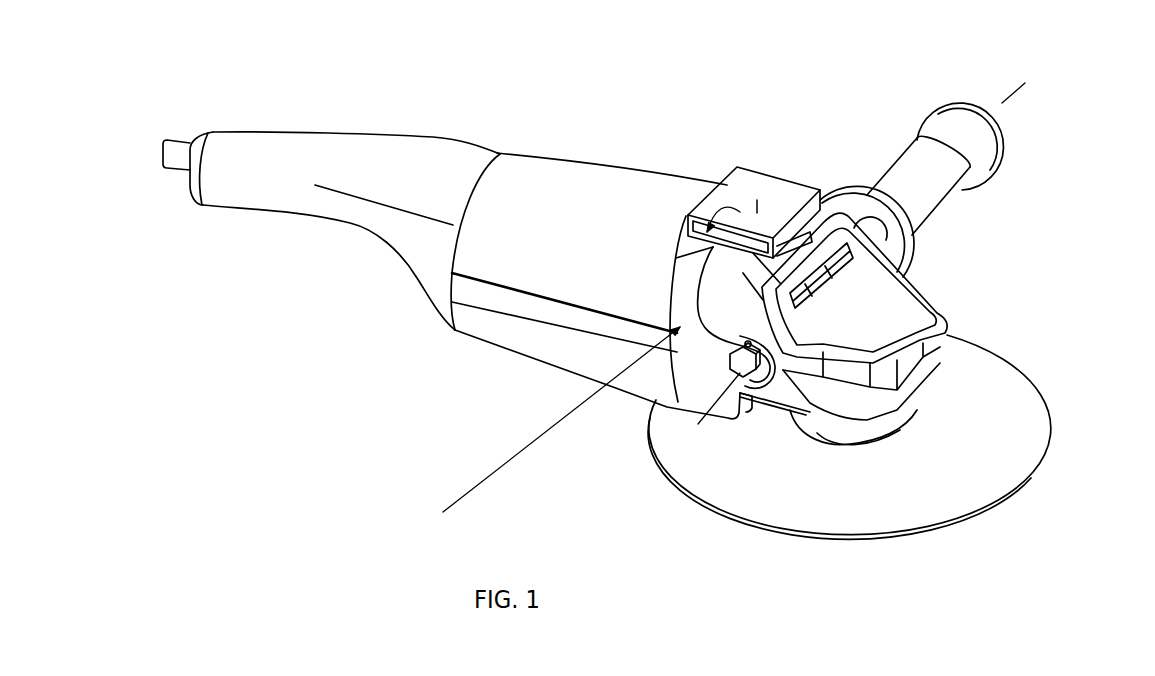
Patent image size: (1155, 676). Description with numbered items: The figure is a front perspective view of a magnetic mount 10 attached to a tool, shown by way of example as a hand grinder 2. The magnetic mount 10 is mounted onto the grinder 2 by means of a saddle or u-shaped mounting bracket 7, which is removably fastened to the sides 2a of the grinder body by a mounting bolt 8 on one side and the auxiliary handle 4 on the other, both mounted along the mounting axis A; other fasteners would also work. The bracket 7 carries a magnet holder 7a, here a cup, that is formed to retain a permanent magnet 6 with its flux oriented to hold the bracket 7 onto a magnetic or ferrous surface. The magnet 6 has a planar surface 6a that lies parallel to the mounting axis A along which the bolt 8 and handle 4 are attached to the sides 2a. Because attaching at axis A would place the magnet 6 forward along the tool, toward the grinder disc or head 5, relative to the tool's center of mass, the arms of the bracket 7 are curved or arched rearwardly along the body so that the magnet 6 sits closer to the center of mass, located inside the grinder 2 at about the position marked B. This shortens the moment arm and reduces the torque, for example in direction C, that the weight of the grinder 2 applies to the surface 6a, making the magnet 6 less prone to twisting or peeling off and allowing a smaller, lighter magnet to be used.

The hand grinder 2 is at (640, 273).
The sides of the body of the grinder 2a is at (773, 390).
The auxiliary handle 4 is at (878, 195).
The grinder disc or head 5 is at (1027, 475).
The permanent magnet 6 is at (758, 212).
The planar surface 6a is at (793, 209).
The mounting bracket 7 is at (723, 263).
The magnet holder 7a is at (823, 193).
The mounting bolt 8 is at (740, 372).
The magnetic mount 10 is at (772, 118).